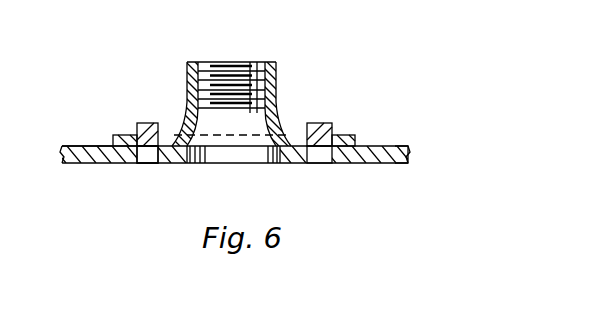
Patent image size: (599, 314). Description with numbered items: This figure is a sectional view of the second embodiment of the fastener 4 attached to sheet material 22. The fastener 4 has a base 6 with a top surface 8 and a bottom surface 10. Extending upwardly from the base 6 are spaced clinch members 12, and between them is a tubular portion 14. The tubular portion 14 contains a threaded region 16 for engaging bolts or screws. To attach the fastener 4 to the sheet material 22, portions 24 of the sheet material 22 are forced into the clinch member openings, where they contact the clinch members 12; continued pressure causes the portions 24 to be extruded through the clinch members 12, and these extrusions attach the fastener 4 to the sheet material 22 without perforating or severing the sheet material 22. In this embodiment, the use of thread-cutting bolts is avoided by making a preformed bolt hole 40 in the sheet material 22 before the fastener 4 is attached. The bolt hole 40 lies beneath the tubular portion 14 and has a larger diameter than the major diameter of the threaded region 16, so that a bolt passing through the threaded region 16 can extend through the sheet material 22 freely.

The fastener 4 is at (183, 77).
The base 6 is at (111, 140).
The top surface 8 is at (114, 133).
The bottom surface 10 is at (118, 152).
The clinch members 12 is at (147, 121).
The tubular portion 14 is at (279, 74).
The threaded region 16 is at (223, 59).
The sheet material 22 is at (412, 156).
The portions of sheet material 24 is at (152, 154).
The preformed bolt hole 40 is at (228, 165).